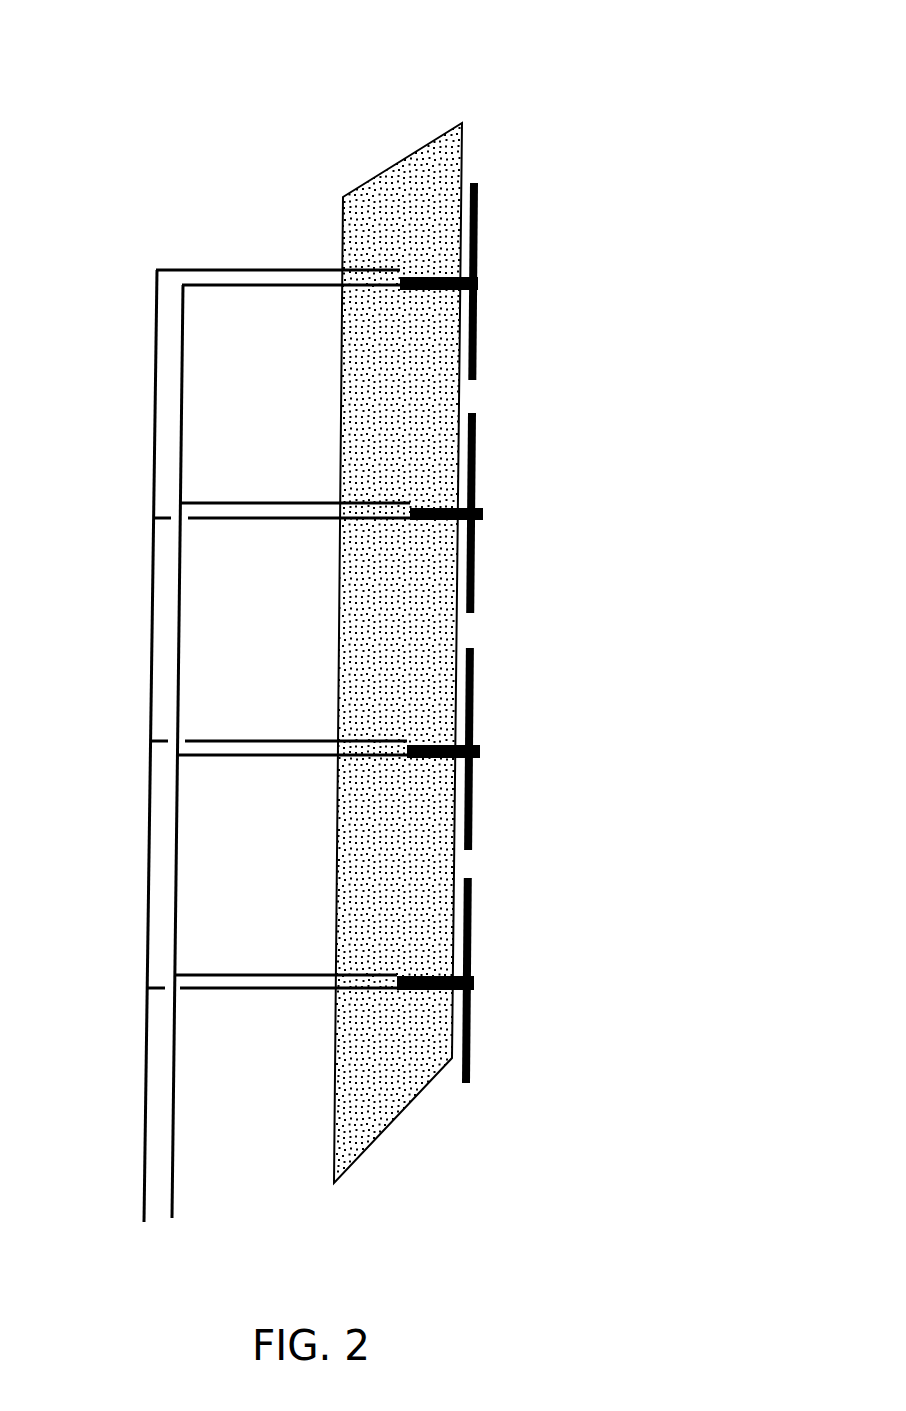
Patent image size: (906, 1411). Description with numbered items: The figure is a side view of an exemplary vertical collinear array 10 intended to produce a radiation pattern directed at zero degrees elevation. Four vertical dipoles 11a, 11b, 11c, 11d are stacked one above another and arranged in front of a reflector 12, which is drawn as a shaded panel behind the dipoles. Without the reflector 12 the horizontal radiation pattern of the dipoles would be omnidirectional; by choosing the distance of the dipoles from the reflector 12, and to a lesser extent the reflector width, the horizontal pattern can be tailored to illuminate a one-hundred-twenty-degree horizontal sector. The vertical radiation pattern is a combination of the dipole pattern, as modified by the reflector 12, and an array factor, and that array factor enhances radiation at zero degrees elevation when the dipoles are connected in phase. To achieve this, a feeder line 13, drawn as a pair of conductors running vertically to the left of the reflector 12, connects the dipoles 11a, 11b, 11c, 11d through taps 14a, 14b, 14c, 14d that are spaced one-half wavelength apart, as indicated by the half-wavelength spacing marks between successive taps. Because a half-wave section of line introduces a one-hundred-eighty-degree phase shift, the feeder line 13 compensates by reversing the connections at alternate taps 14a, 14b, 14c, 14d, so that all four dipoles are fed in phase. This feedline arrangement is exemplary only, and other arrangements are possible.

The vertical collinear array 10 is at (520, 82).
The vertical dipole 11a is at (485, 232).
The vertical dipole 11b is at (483, 447).
The vertical dipole 11c is at (480, 690).
The vertical dipole 11d is at (478, 912).
The reflector 12 is at (388, 1128).
The feeder line 13 is at (173, 1148).
The tap 14a is at (232, 260).
The tap 14b is at (214, 495).
The tap 14c is at (215, 727).
The tap 14d is at (207, 965).